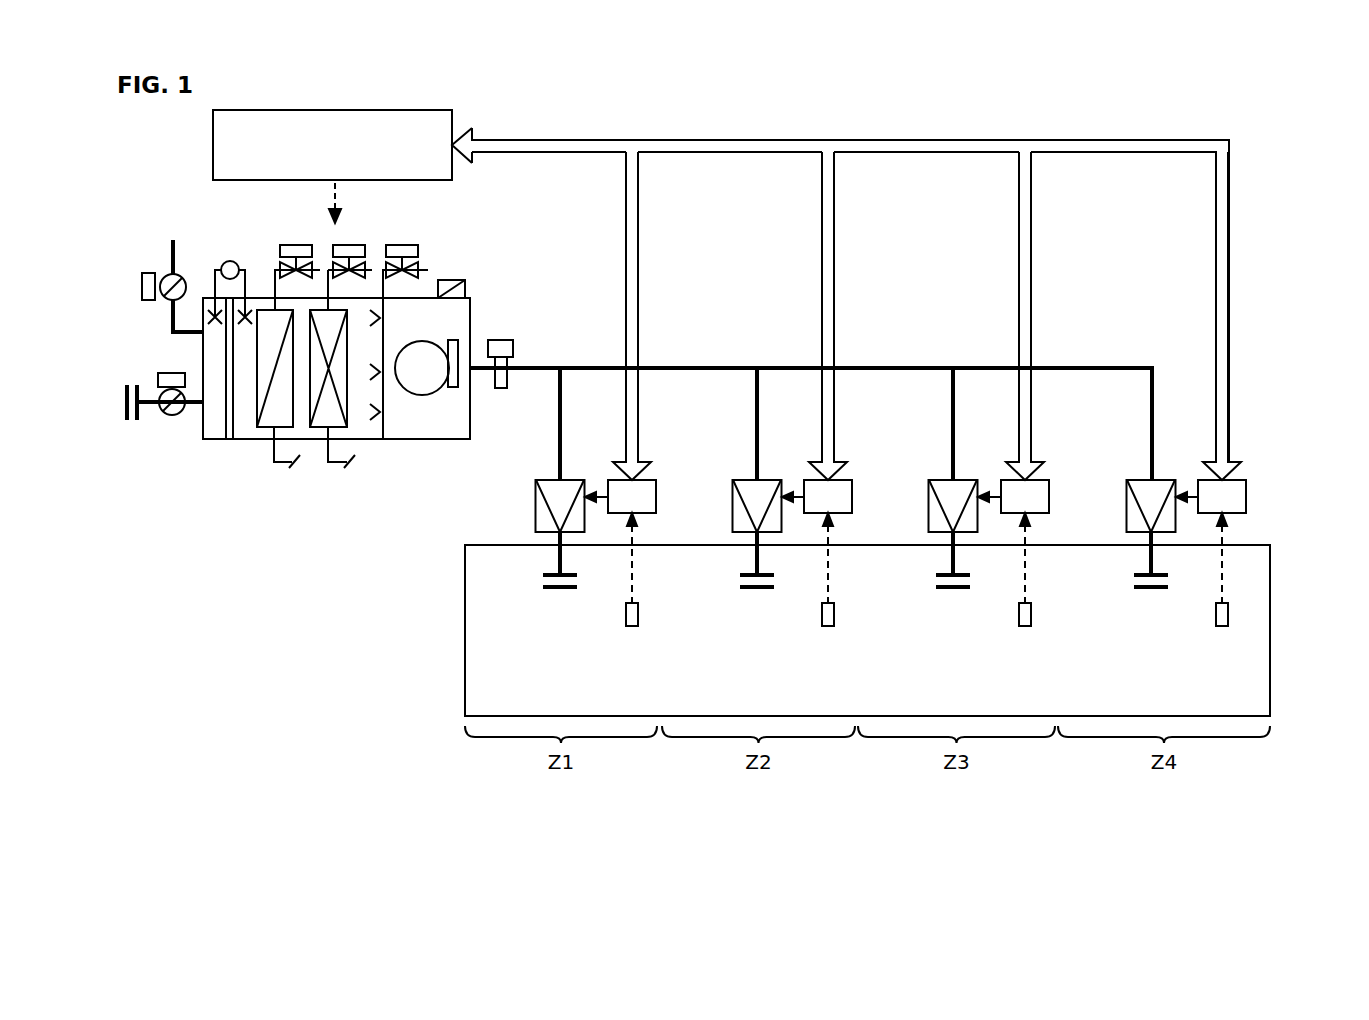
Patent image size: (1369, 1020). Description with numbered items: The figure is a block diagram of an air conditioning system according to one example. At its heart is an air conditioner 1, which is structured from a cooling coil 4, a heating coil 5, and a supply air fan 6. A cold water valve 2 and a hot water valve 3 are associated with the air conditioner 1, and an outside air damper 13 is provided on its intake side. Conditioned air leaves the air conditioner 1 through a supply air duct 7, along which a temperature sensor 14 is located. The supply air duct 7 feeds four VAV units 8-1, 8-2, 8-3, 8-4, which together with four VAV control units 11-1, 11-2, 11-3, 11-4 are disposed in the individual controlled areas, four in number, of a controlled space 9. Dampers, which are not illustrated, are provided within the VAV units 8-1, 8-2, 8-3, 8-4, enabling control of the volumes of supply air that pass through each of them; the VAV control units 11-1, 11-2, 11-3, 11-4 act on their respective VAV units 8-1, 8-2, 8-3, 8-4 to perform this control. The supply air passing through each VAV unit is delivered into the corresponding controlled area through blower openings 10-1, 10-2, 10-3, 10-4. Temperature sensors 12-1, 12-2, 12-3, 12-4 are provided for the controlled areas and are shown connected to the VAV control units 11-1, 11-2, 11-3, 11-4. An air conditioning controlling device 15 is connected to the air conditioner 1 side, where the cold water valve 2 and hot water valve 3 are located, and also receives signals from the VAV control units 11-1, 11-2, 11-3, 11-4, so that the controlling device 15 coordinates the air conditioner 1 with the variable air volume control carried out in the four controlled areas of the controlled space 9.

The air conditioner 1 is at (215, 440).
The cold water valve 2 is at (282, 244).
The hot water valve 3 is at (358, 244).
The cooling coil 4 is at (268, 430).
The heating coil 5 is at (323, 440).
The supply air fan 6 is at (421, 395).
The supply air duct 7 is at (680, 366).
The VAV unit 8-1 is at (536, 512).
The VAV unit 8-2 is at (733, 512).
The VAV unit 8-3 is at (929, 512).
The VAV unit 8-4 is at (1127, 512).
The controlled space 9 is at (465, 578).
The blower opening 10-1 is at (552, 592).
The blower opening 10-2 is at (749, 592).
The blower opening 10-3 is at (945, 592).
The blower opening 10-4 is at (1143, 592).
The VAV control unit 11-1 is at (642, 480).
The VAV control unit 11-2 is at (838, 480).
The VAV control unit 11-3 is at (1035, 480).
The VAV control unit 11-4 is at (1232, 480).
The temperature sensor 12-1 is at (637, 627).
The temperature sensor 12-2 is at (833, 627).
The temperature sensor 12-3 is at (1030, 627).
The temperature sensor 12-4 is at (1227, 627).
The outside air damper 13 is at (170, 420).
The temperature sensor 14 is at (502, 389).
The air conditioning controlling device 15 is at (305, 110).